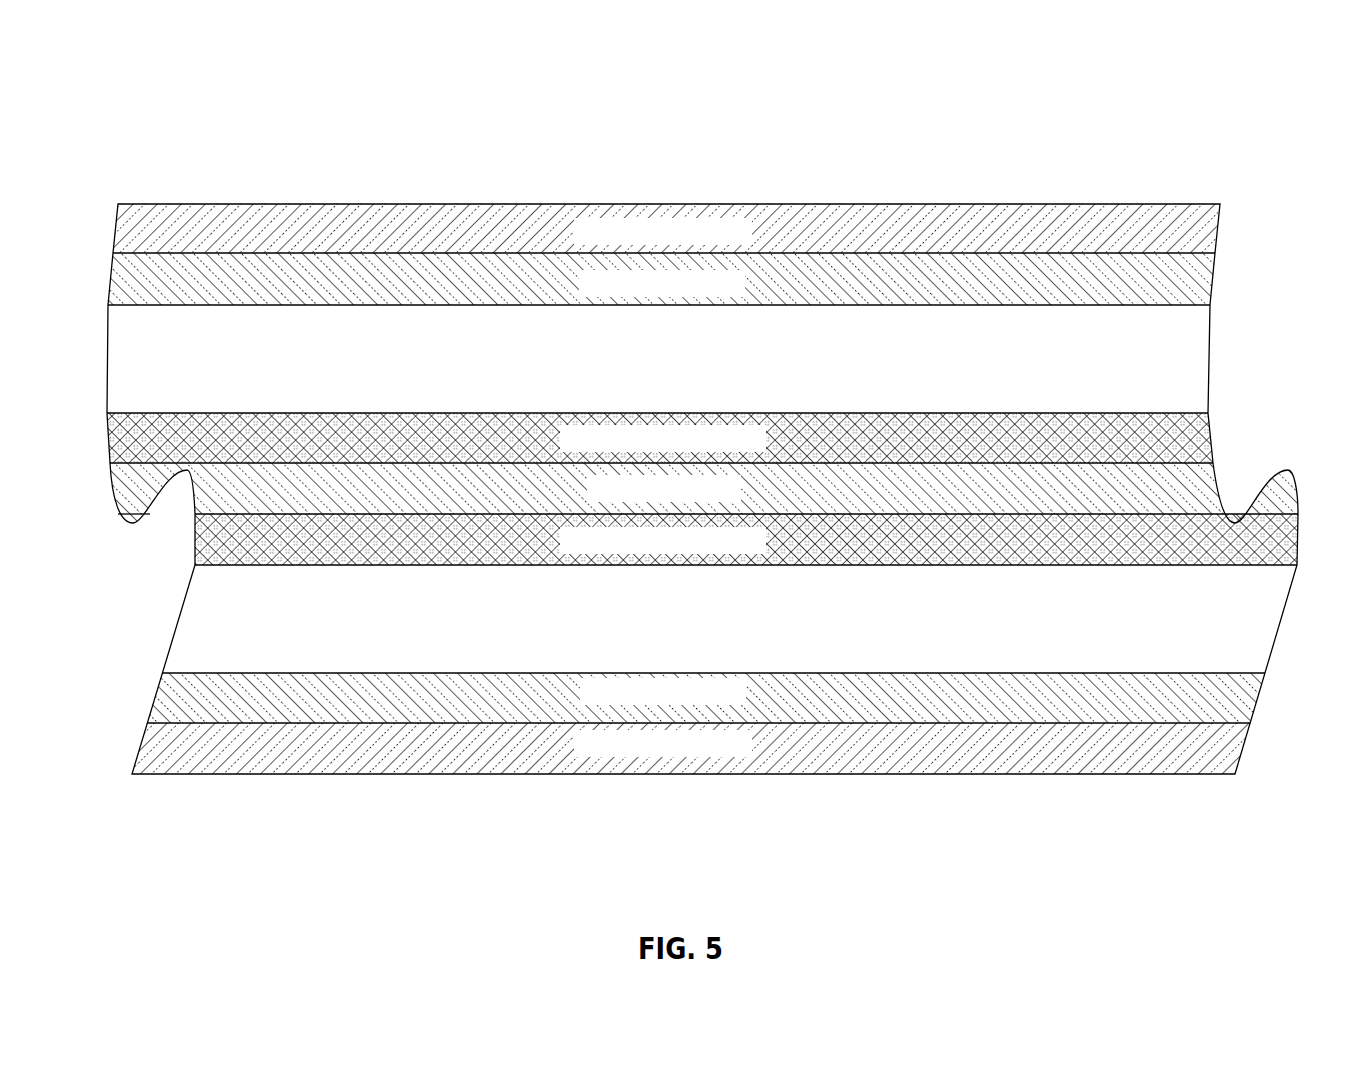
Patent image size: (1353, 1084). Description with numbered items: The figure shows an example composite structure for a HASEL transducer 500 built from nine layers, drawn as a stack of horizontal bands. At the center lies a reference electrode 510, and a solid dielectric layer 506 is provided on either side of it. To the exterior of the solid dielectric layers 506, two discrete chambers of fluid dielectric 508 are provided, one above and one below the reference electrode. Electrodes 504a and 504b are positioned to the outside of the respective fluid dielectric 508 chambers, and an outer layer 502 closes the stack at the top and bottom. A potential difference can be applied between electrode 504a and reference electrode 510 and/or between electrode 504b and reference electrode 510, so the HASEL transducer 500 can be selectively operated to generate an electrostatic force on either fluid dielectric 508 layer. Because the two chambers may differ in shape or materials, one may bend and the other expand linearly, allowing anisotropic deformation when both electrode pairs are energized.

The HASEL transducer 500 is at (1078, 126).
The outer layer 502 is at (681, 489).
The electrode 504a is at (661, 279).
The electrode 504b is at (706, 698).
The solid dielectric layer 506 is at (702, 489).
The fluid dielectric 508 is at (686, 504).
The reference electrode 510 is at (704, 493).